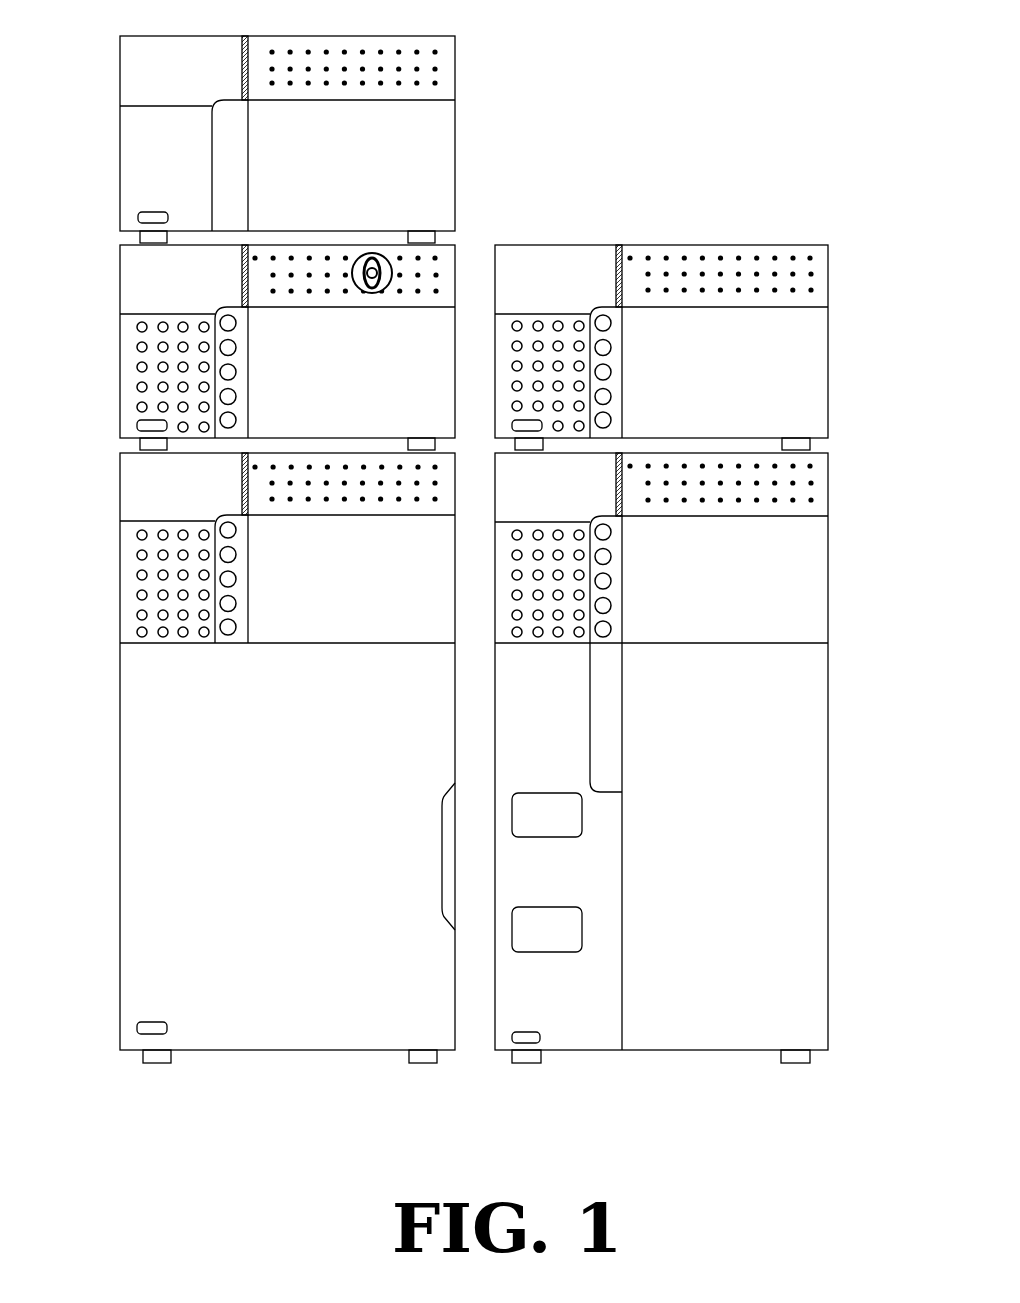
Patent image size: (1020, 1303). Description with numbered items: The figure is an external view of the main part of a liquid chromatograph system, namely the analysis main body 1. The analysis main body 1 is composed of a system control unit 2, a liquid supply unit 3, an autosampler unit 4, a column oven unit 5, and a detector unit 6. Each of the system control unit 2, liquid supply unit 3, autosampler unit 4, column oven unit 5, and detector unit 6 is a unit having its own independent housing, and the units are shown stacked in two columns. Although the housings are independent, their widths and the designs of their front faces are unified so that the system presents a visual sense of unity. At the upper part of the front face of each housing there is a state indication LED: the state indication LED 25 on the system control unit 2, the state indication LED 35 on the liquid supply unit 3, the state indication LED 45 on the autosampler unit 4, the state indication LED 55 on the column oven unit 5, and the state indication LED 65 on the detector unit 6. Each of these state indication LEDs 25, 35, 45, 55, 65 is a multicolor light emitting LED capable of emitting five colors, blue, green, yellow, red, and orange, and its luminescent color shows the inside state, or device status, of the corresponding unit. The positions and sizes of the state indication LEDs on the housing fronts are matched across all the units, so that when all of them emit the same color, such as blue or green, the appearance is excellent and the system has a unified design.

The analysis main body 1 is at (599, 73).
The system control unit 2 is at (250, 132).
The state indication LED 25 is at (242, 80).
The liquid supply unit 3 is at (251, 343).
The state indication LED 35 is at (242, 297).
The autosampler unit 4 is at (251, 753).
The state indication LED 45 is at (242, 502).
The column oven unit 5 is at (700, 752).
The state indication LED 55 is at (623, 505).
The detector unit 6 is at (700, 342).
The state indication LED 65 is at (623, 296).